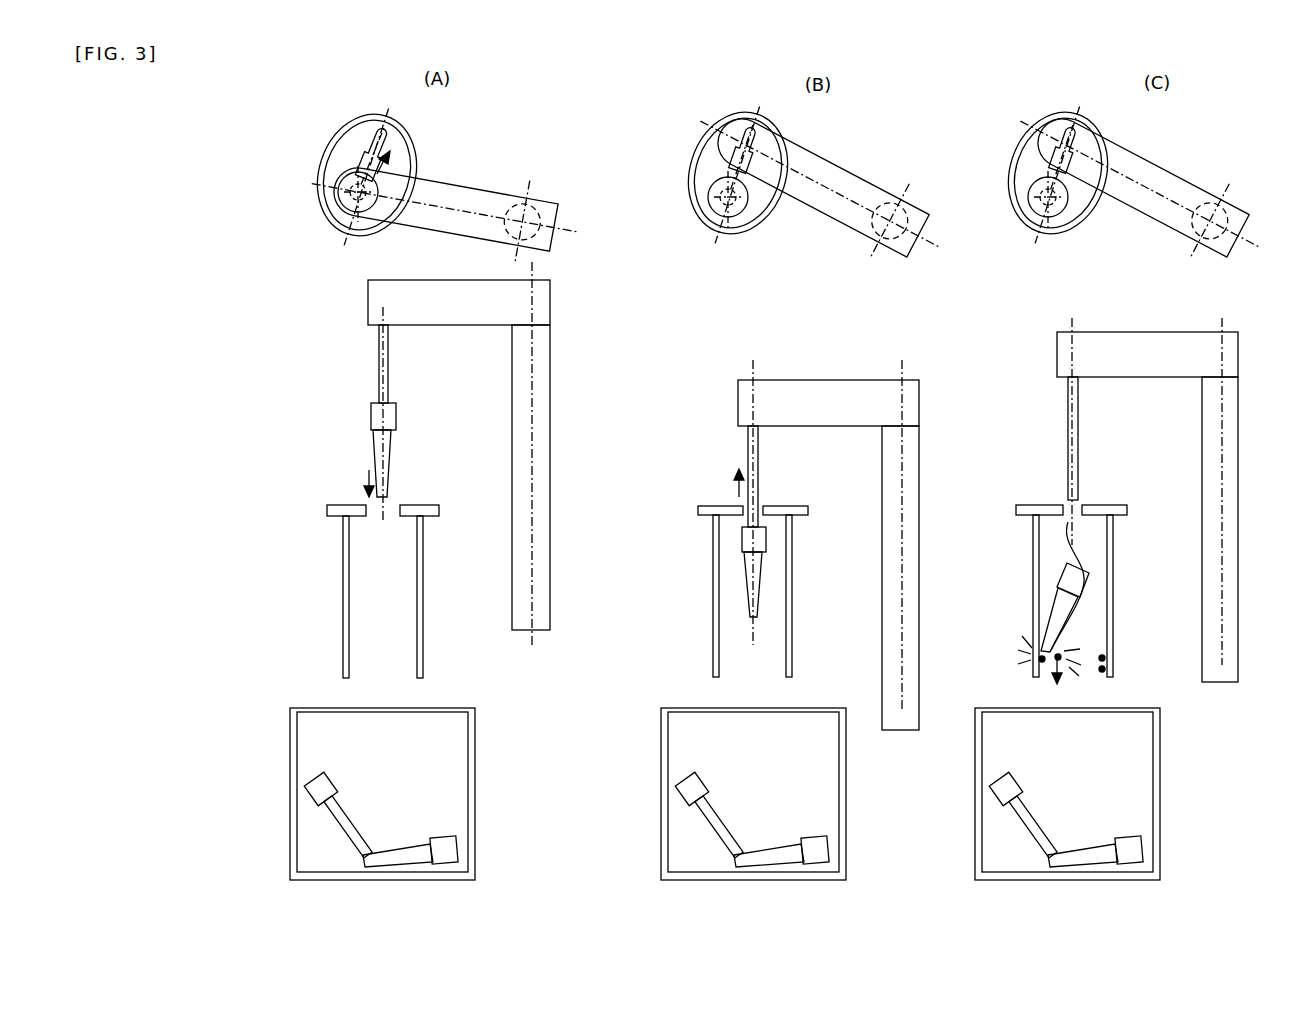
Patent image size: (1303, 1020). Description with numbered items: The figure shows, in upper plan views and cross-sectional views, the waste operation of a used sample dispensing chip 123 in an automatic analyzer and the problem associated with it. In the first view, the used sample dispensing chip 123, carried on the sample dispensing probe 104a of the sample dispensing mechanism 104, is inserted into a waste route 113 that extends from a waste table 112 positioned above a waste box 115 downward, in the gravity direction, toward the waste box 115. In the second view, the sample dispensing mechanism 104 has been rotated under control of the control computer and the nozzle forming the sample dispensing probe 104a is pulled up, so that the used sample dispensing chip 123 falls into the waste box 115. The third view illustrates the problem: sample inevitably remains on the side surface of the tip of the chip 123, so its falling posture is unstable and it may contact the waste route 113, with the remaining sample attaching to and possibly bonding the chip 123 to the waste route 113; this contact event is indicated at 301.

The sample dispensing mechanism 104 is at (467, 187).
The sample dispensing probe 104a is at (377, 367).
The waste table 112 is at (345, 162).
The waste route 113 is at (345, 590).
The waste box 115 is at (477, 770).
The sample dispensing chip 123 is at (370, 418).
The collision 301 is at (1040, 653).